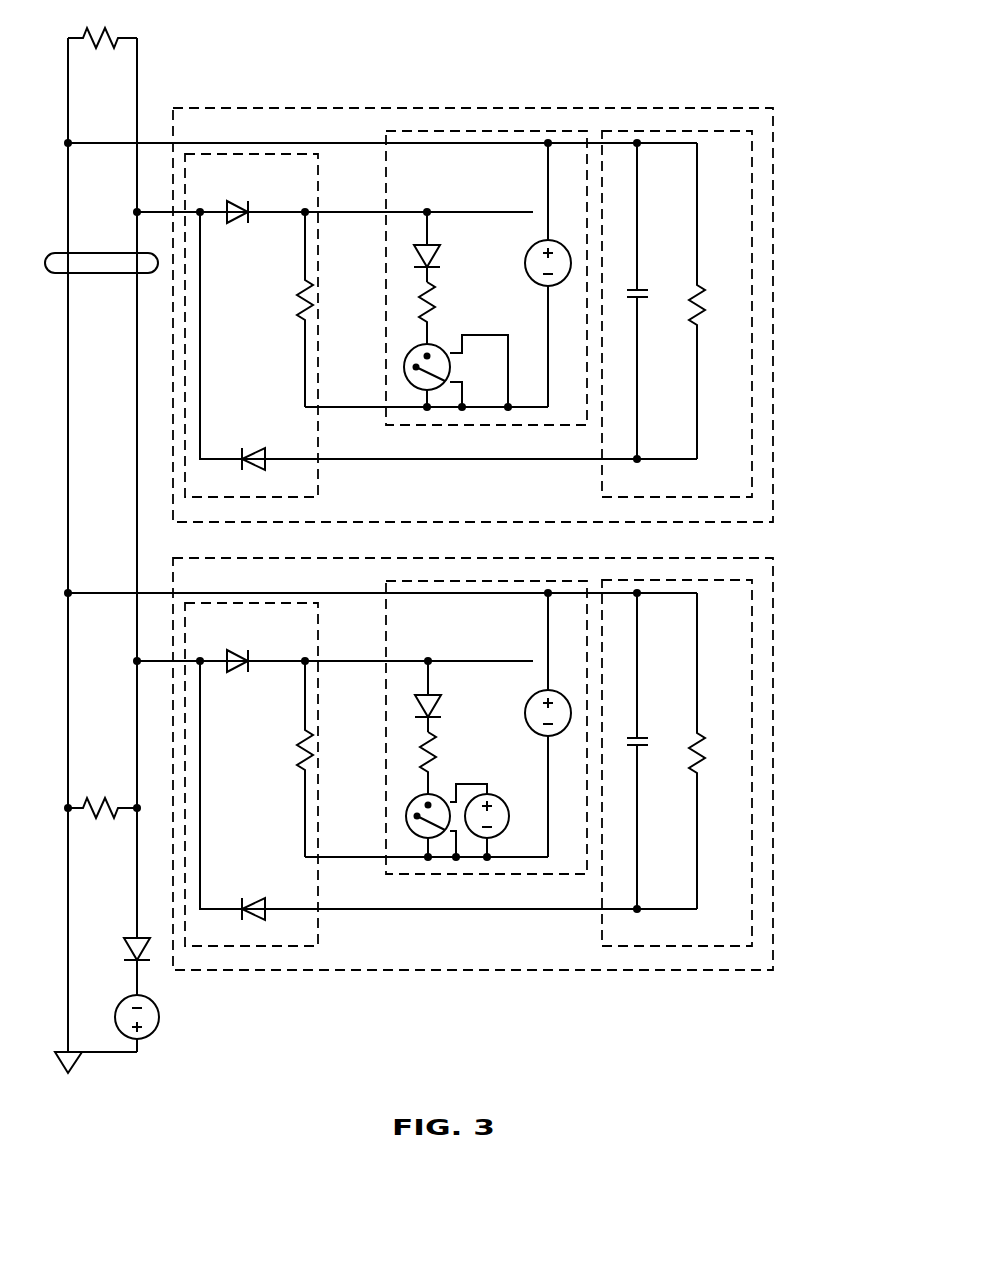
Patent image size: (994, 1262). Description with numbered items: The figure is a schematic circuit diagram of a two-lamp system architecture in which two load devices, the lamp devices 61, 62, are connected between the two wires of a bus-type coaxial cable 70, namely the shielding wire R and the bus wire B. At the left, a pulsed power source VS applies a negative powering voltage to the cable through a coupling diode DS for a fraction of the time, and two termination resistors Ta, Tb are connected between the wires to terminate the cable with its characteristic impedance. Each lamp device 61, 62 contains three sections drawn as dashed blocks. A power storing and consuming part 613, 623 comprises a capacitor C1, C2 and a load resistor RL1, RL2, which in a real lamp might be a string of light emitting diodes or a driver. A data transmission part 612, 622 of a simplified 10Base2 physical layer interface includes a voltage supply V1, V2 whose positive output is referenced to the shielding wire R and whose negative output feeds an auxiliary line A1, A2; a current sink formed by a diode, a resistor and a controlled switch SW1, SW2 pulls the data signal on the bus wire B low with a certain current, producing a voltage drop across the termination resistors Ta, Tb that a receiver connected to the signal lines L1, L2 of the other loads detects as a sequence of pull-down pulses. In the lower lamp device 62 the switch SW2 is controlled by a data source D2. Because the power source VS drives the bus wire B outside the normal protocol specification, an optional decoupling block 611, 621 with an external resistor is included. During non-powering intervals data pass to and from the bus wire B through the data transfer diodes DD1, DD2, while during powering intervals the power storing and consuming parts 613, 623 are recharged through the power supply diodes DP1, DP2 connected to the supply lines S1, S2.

The lamp device 61 is at (773, 200).
The decoupling block 611 is at (318, 473).
The data transmission part 612 is at (407, 427).
The power storing and consuming part 613 is at (752, 350).
The supply line S1 is at (587, 459).
The lamp device 62 is at (773, 650).
The decoupling block 621 is at (318, 922).
The data transmission part 622 is at (407, 875).
The power storing and consuming part 623 is at (752, 800).
The supply line S2 is at (587, 909).
The coaxial cable 70 is at (112, 273).
The termination resistor Tb is at (102, 24).
The termination resistor Ta is at (102, 793).
The coupling diode DS is at (123, 950).
The pulsed power source VS is at (107, 1034).
The shielding wire R is at (380, 355).
The bus wire B is at (333, 424).
The data transfer diode DD1 is at (237, 198).
The power supply diode DP1 is at (448, 341).
The signal line L1 is at (480, 198).
The controlled switch SW1 is at (415, 371).
The voltage supply V1 is at (554, 275).
The auxiliary line A1 is at (548, 338).
The capacitor C1 is at (650, 301).
The load resistor RL1 is at (718, 301).
The data transfer diode DD2 is at (237, 647).
The power supply diode DP2 is at (448, 790).
The signal line L2 is at (480, 648).
The controlled switch SW2 is at (404, 820).
The data source D2 is at (496, 813).
The voltage supply V2 is at (554, 725).
The auxiliary line A2 is at (548, 798).
The capacitor C2 is at (650, 751).
The load resistor RL2 is at (718, 751).